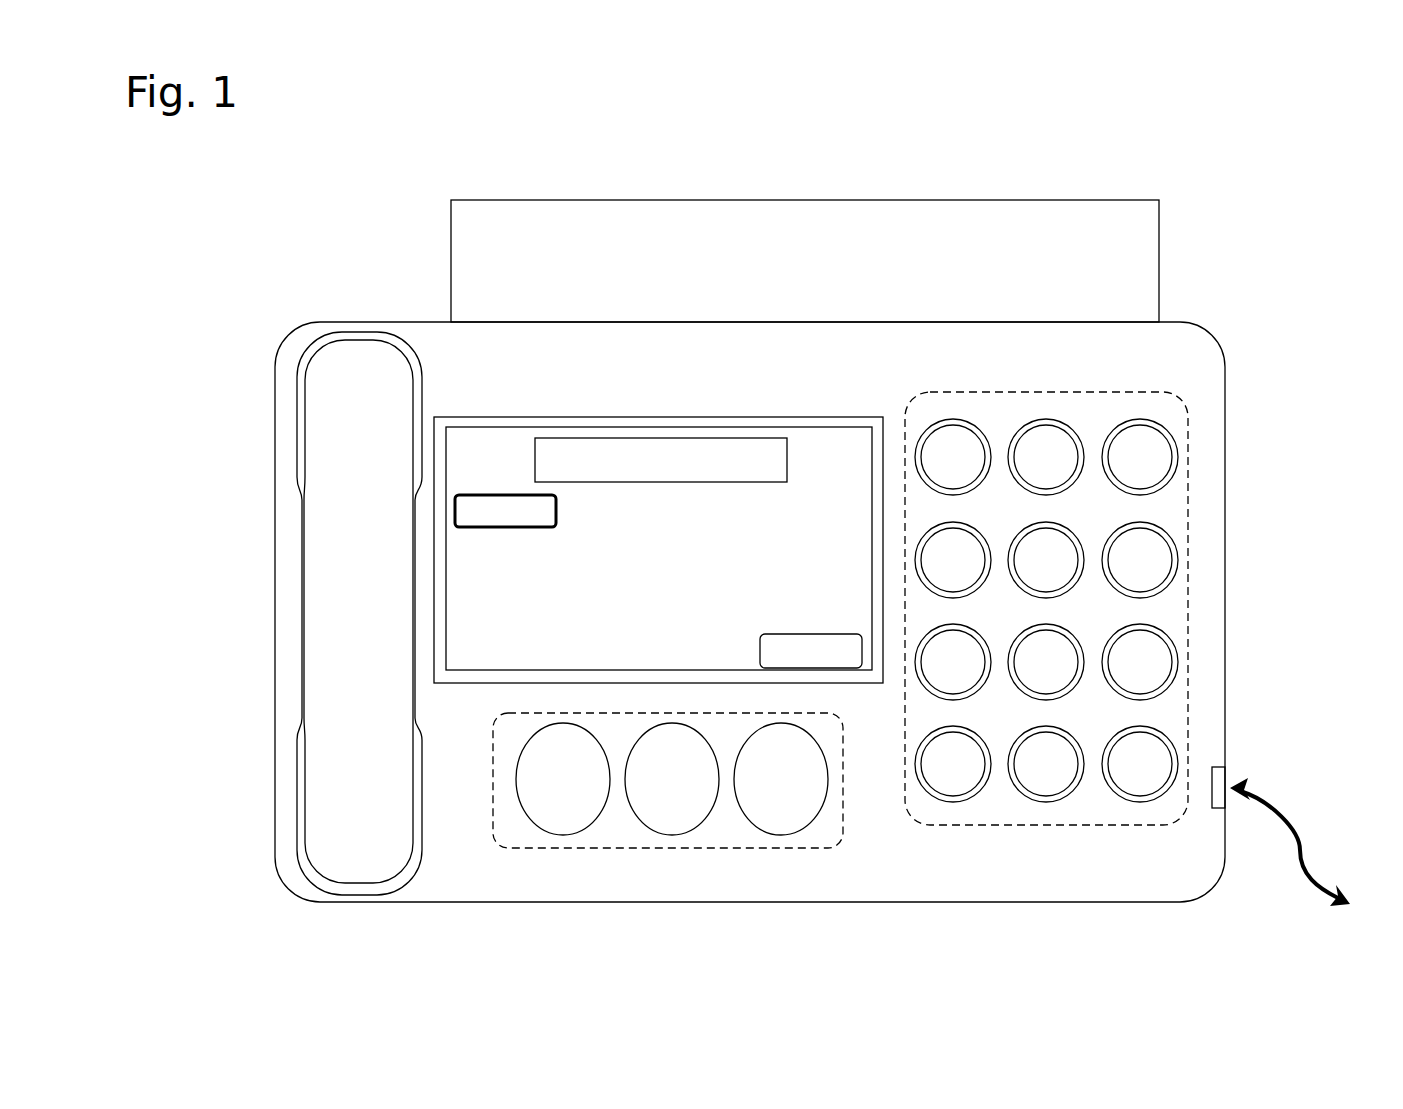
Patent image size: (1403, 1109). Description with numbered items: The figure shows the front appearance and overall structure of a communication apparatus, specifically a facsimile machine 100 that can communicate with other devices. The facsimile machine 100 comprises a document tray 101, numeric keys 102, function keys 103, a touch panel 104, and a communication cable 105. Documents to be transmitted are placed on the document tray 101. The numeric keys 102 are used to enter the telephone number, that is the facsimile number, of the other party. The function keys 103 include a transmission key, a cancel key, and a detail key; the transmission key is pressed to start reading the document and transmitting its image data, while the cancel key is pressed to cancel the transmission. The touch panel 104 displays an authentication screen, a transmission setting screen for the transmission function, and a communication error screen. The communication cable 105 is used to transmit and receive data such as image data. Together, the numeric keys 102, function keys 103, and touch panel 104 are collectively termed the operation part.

The facsimile machine 100 is at (1197, 362).
The document tray 101 is at (1137, 256).
The numeric keys 102 is at (1188, 592).
The function keys 103 is at (590, 848).
The touch panel 104 is at (475, 423).
The communication cable 105 is at (1273, 812).